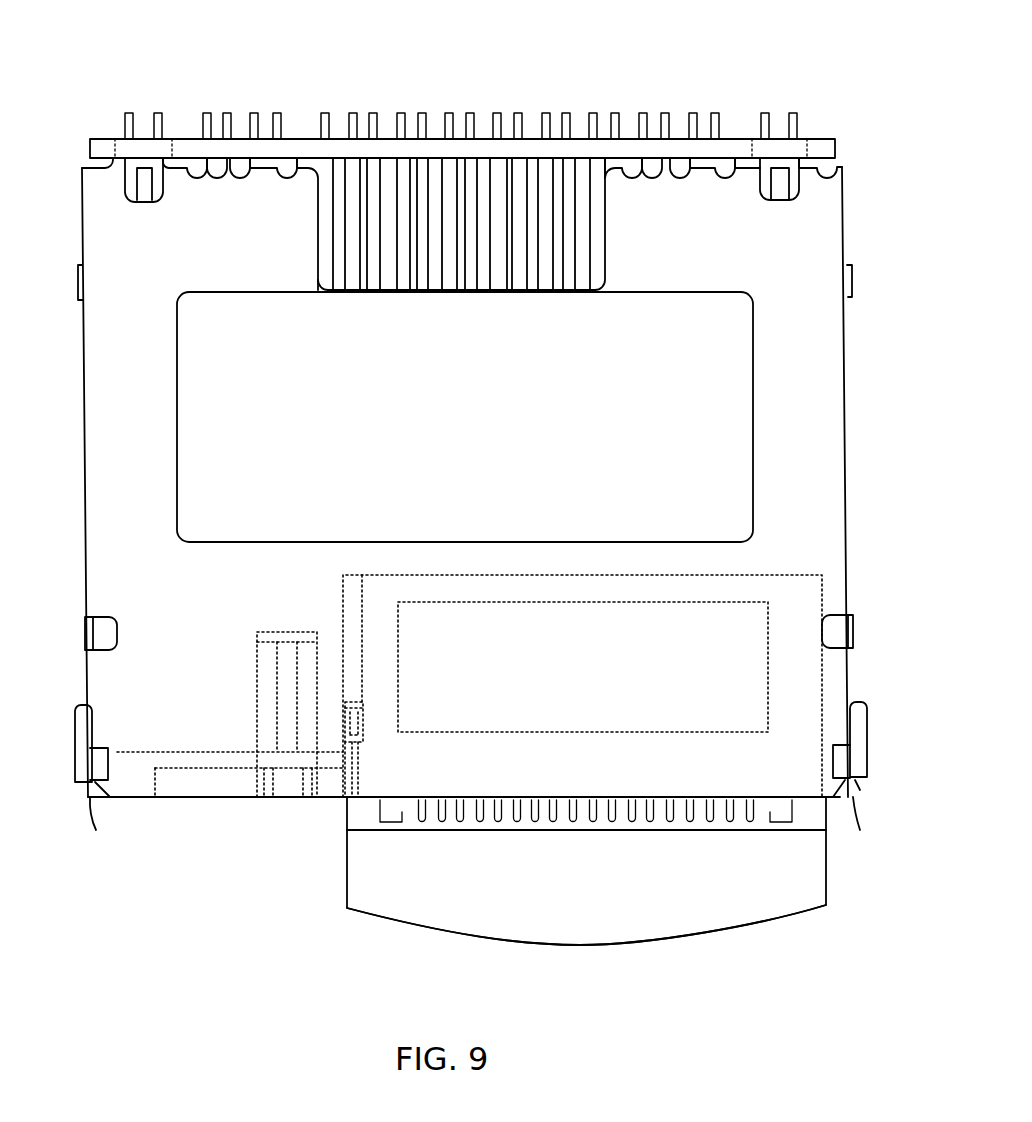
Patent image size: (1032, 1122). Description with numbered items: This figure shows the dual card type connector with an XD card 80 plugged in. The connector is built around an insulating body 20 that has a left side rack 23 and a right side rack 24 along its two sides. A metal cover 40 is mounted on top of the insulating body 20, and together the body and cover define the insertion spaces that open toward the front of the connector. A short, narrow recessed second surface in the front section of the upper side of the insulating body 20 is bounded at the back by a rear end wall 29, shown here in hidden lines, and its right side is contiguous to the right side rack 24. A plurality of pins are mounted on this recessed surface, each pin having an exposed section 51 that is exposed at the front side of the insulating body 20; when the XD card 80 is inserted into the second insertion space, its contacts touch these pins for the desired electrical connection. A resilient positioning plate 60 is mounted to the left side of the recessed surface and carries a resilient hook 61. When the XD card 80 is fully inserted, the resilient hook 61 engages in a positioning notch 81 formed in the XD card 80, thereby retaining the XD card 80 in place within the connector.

The insulating body 20 is at (715, 112).
The metal cover 40 is at (102, 222).
The rear end wall 29 is at (777, 575).
The resilient hook 61 is at (352, 725).
The resilient positioning plate 60 is at (358, 742).
The left side rack 23 is at (90, 800).
The right side rack 24 is at (855, 800).
The XD card 80 is at (586, 874).
The positioning notch 81 is at (363, 723).
The exposed section 51 is at (663, 812).